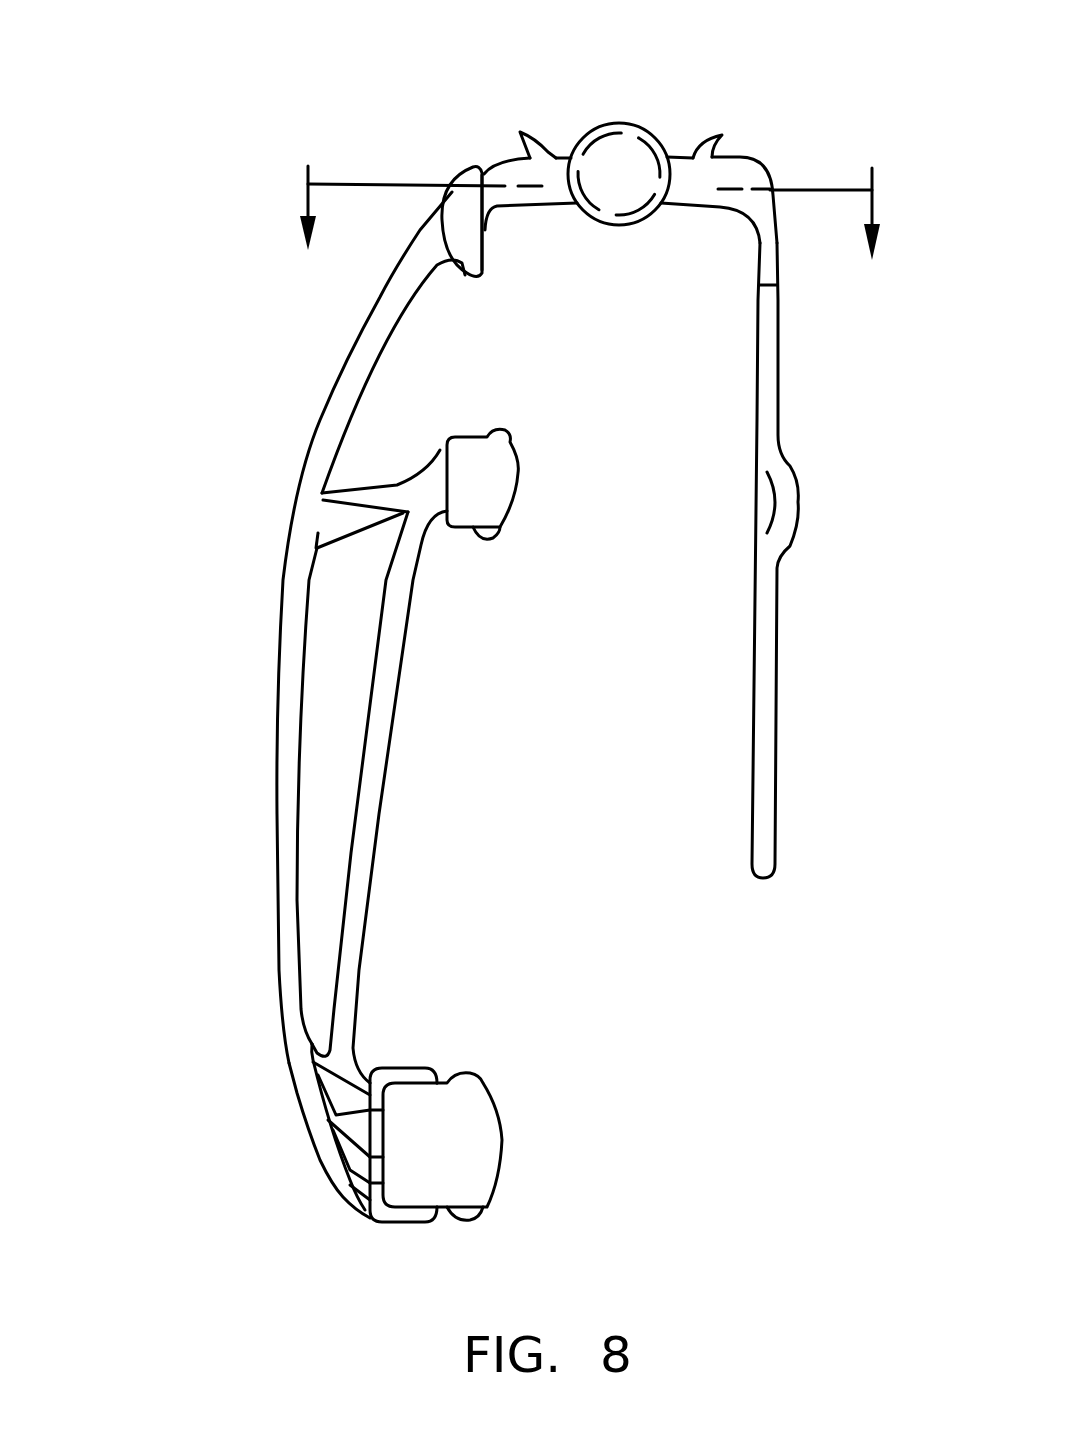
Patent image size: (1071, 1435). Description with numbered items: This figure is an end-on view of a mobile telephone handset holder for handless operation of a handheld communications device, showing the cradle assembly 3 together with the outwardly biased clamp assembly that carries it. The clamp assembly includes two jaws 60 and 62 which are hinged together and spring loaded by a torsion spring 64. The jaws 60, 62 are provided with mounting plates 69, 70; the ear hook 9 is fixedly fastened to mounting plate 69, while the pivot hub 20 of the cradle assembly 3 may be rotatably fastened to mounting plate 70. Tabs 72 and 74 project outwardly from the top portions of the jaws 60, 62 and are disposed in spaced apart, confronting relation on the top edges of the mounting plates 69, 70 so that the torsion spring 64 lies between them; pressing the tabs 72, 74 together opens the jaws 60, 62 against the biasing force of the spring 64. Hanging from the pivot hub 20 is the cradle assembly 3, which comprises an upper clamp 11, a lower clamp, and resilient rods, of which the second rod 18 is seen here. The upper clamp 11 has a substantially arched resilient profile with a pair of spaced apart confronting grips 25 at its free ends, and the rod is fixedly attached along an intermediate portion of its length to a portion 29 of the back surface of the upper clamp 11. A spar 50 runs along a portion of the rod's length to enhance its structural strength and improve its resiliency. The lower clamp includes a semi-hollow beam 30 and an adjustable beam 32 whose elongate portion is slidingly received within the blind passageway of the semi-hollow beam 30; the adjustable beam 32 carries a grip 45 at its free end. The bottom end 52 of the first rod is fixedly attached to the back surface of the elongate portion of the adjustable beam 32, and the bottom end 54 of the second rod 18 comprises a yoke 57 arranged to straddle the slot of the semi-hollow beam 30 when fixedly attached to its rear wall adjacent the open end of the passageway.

The cradle assembly 3 is at (222, 611).
The ear hook 9 is at (865, 764).
The upper clamp 11 is at (535, 503).
The second rod 18 is at (283, 825).
The pivot hub 20 is at (465, 277).
The grips 25 is at (477, 520).
The portion of back surface 29 is at (441, 466).
The semi-hollow beam 30 is at (408, 1062).
The adjustable beam 32 is at (440, 1197).
The grip 45 is at (500, 1143).
The spar 50 is at (367, 789).
The bottom end of first rod 52 is at (370, 1147).
The bottom end of second rod 54 is at (293, 1055).
The yoke 57 is at (378, 1048).
The jaw 60 is at (755, 150).
The jaw 62 is at (478, 147).
The torsion spring 64 is at (628, 122).
The mounting plate 69 is at (772, 252).
The mounting plate 70 is at (490, 230).
The tab 72 is at (536, 137).
The tab 74 is at (704, 143).